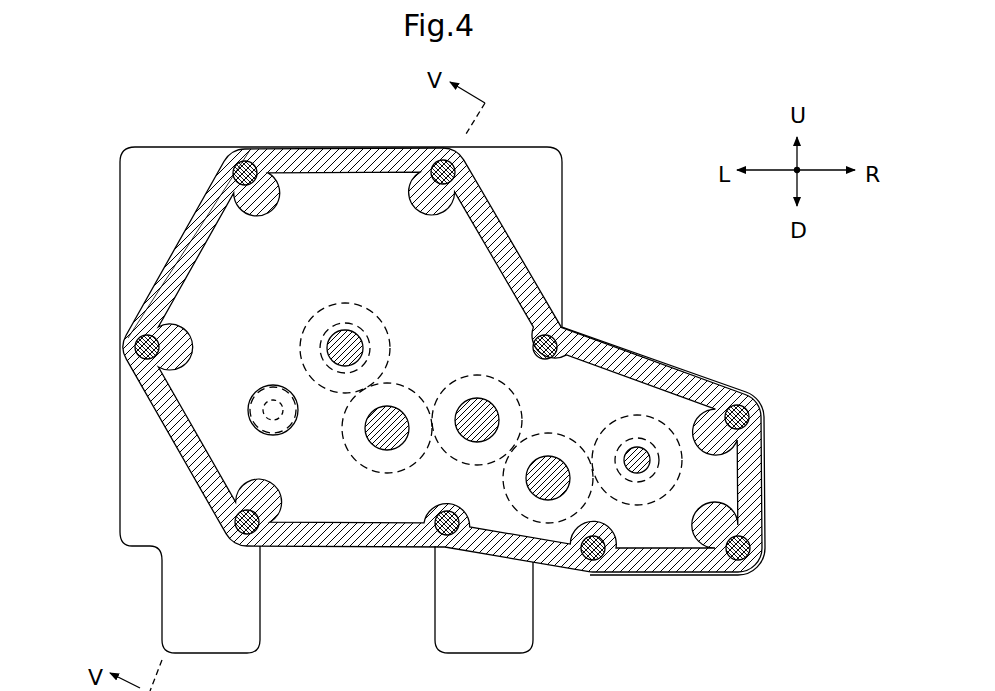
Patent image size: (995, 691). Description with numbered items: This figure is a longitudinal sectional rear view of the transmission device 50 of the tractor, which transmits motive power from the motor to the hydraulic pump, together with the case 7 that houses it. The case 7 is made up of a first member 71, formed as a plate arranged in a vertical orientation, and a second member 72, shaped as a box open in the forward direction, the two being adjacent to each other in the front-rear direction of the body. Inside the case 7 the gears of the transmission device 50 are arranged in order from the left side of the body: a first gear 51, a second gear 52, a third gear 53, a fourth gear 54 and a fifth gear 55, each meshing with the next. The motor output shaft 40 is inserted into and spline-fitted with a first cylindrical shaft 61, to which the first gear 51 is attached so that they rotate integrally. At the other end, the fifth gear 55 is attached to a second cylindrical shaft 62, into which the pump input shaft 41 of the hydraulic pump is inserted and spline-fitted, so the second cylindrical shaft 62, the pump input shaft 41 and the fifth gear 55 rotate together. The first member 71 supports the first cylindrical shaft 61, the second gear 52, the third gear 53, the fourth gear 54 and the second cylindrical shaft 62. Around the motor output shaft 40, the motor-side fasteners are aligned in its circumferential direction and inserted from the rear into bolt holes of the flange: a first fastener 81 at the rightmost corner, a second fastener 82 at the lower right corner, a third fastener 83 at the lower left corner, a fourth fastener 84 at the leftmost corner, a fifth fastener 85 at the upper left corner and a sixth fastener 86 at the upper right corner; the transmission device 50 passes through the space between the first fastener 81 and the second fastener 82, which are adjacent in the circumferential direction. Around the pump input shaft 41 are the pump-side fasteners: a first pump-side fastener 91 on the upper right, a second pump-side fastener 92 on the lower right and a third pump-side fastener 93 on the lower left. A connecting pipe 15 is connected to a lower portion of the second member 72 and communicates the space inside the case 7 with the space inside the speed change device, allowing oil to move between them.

The case 7 is at (113, 302).
The connecting pipe 15 is at (276, 386).
The motor output shaft 40 is at (346, 345).
The pump input shaft 41 is at (647, 463).
The transmission device 50 is at (402, 496).
The first gear 51 is at (393, 348).
The second gear 52 is at (345, 430).
The third gear 53 is at (462, 375).
The fourth gear 54 is at (542, 434).
The fifth gear 55 is at (640, 508).
The first cylindrical shaft 61 is at (363, 323).
The second cylindrical shaft 62 is at (638, 440).
The first member 71 is at (552, 192).
The second member 72 is at (190, 238).
The first fastener 81 is at (558, 338).
The second fastener 82 is at (450, 538).
The third fastener 83 is at (236, 545).
The fourth fastener 84 is at (136, 344).
The fifth fastener 85 is at (246, 160).
The sixth fastener 86 is at (452, 168).
The first pump-side fastener 91 is at (748, 408).
The second pump-side fastener 92 is at (750, 557).
The third pump-side fastener 93 is at (603, 553).